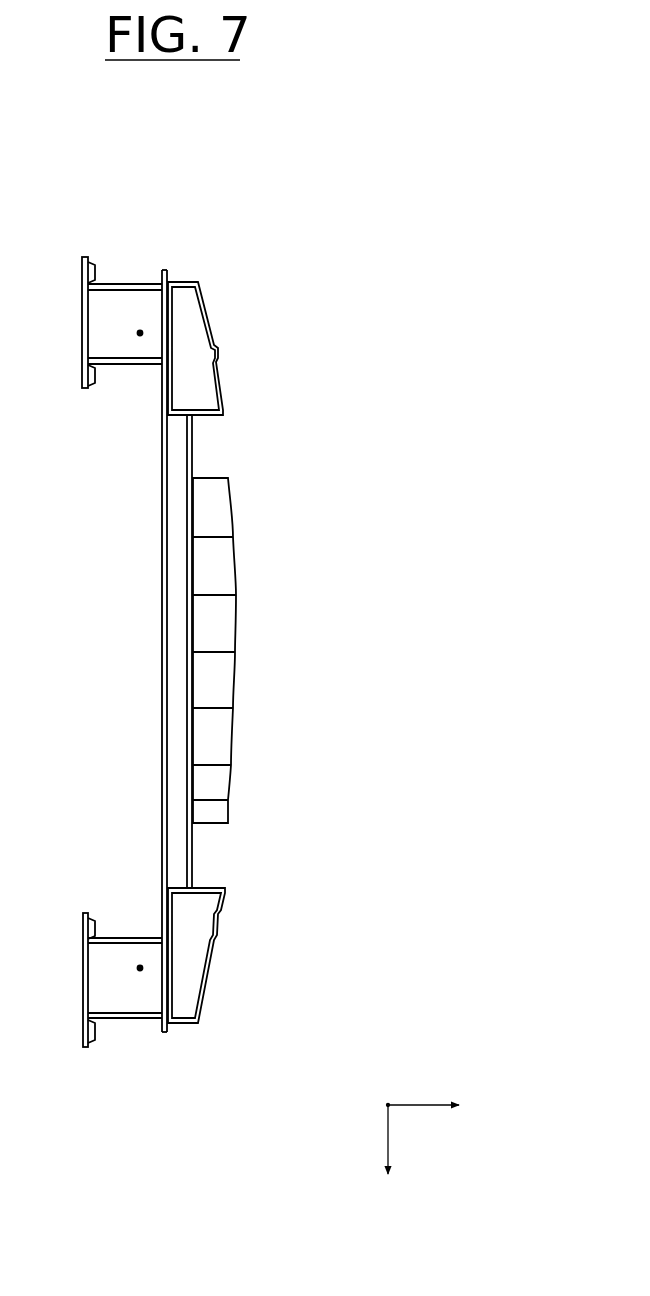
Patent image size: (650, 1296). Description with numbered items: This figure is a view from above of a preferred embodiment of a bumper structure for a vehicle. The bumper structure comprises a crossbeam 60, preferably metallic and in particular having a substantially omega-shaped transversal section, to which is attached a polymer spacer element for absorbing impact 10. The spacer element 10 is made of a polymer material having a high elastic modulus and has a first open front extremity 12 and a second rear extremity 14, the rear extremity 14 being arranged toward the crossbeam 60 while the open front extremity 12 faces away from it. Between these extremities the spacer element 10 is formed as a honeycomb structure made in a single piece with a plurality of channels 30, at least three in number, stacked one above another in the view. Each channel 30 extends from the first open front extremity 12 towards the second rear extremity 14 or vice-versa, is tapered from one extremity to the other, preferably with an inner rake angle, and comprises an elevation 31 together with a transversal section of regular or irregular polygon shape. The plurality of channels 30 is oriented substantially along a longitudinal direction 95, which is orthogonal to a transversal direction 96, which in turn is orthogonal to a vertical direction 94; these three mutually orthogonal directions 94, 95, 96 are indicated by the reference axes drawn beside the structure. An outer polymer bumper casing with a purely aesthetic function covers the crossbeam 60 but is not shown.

The polymer spacer element for absorbing impact 10 is at (437, 591).
The first open front extremity 12 is at (229, 478).
The second rear extremity 14 is at (194, 476).
The channel 30 is at (244, 507).
The elevation 31 is at (209, 478).
The crossbeam 60 is at (134, 628).
The vertical direction 94 is at (388, 1103).
The longitudinal direction 95 is at (444, 1109).
The transversal direction 96 is at (393, 1159).